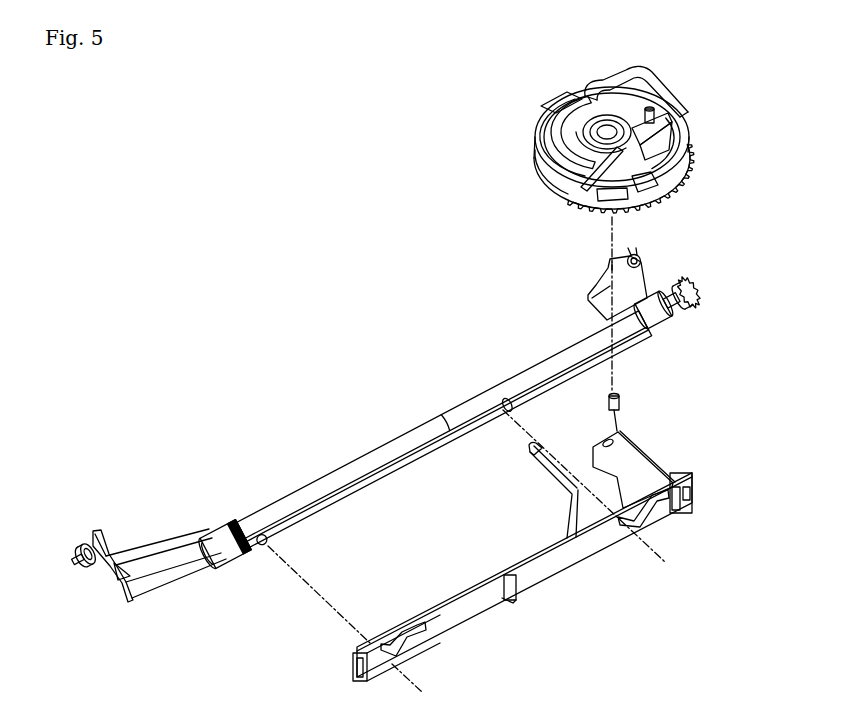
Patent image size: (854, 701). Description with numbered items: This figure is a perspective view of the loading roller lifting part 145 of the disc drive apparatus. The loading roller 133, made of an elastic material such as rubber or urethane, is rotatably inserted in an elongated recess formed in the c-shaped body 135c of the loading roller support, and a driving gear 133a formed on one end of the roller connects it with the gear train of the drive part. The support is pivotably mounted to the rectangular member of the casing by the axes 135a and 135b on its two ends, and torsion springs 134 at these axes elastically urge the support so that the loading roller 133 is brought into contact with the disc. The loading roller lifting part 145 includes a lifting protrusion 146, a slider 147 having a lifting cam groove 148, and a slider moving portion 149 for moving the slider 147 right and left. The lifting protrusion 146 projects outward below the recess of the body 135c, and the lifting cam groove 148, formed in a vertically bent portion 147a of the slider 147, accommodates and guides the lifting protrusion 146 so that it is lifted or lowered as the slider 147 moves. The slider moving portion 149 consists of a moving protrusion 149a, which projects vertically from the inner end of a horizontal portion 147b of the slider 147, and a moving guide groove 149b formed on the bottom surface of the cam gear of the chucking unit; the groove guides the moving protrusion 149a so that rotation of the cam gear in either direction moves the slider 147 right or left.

The loading roller 133 is at (284, 496).
The driving gear 133a is at (688, 281).
The torsion spring 134 is at (639, 255).
The axis 135a is at (642, 254).
The axis 135b is at (79, 561).
The body 135c is at (148, 601).
The loading roller lifting part 145 is at (617, 598).
The lifting protrusion 146 is at (502, 396).
The slider 147 is at (534, 592).
The vertically bent portion 147a is at (442, 620).
The horizontal portion 147b is at (643, 463).
The lifting cam groove 148 is at (644, 513).
The slider moving portion 149 is at (507, 282).
The moving protrusion 149a is at (606, 403).
The moving guide groove 149b is at (590, 216).